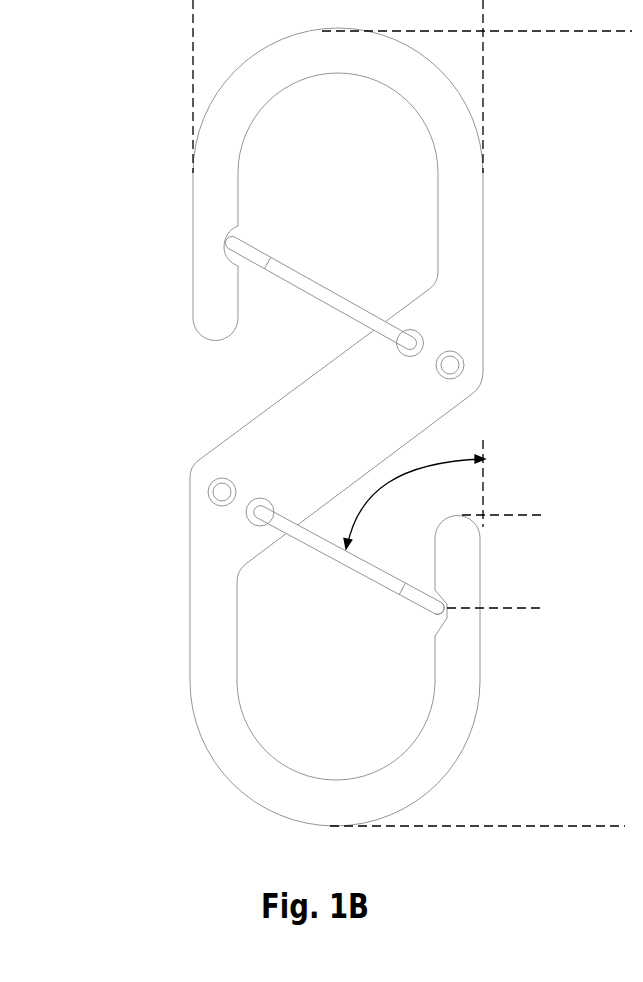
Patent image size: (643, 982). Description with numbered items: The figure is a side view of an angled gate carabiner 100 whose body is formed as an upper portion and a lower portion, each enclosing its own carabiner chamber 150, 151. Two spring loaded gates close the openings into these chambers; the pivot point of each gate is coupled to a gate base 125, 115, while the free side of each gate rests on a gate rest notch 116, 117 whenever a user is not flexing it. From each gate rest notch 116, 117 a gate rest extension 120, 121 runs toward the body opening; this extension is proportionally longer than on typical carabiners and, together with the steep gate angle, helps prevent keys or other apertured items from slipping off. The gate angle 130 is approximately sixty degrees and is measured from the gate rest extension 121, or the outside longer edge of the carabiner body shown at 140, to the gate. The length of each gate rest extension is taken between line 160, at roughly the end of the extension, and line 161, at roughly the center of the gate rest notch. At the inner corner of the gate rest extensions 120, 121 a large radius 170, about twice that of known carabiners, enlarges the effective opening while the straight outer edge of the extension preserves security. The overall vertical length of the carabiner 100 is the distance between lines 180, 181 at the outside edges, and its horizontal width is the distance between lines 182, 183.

The angled gate carabiner 100 is at (277, 427).
The gate base 115 is at (262, 503).
The gate rest notch 116 is at (228, 243).
The gate rest notch 117 is at (442, 624).
The gate base 125 is at (420, 337).
The gate rest extension 120 is at (220, 283).
The gate rest extension 121 is at (457, 570).
The gate angle 130 is at (413, 476).
The outside longer edge of the carabiner body 140 is at (487, 483).
The carabiner chamber 150 is at (333, 167).
The carabiner chamber 151 is at (302, 672).
The line at end of gate rest extension 160 is at (542, 515).
The line at center of gate rest notch 161 is at (540, 608).
The radius 170 is at (223, 330).
The line 180 is at (608, 32).
The line 181 is at (570, 828).
The line 182 is at (193, 52).
The line 183 is at (484, 69).